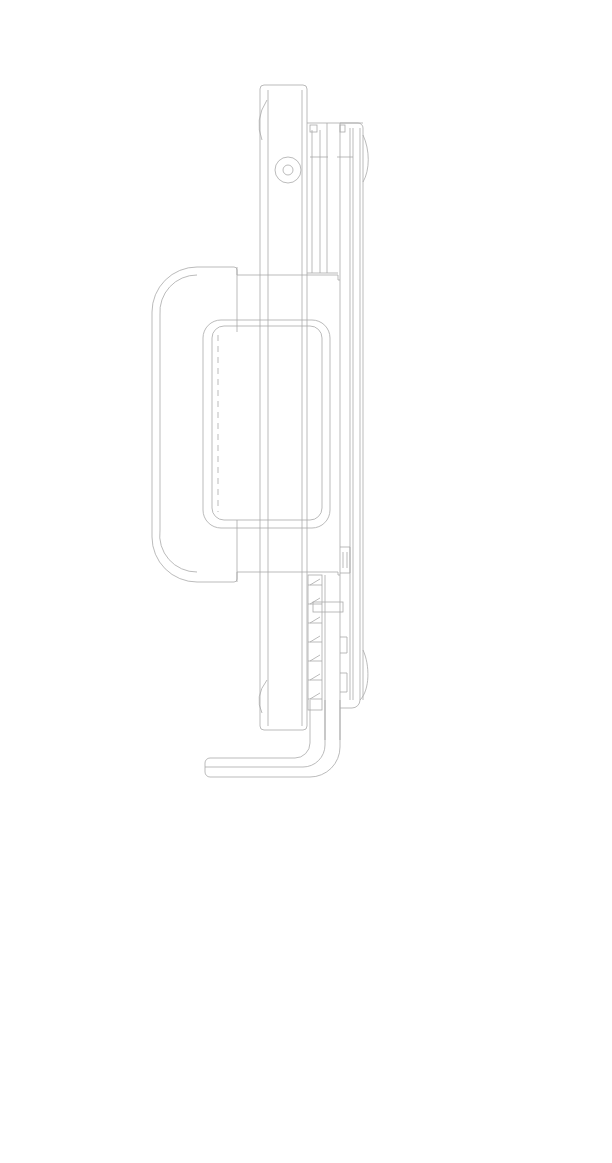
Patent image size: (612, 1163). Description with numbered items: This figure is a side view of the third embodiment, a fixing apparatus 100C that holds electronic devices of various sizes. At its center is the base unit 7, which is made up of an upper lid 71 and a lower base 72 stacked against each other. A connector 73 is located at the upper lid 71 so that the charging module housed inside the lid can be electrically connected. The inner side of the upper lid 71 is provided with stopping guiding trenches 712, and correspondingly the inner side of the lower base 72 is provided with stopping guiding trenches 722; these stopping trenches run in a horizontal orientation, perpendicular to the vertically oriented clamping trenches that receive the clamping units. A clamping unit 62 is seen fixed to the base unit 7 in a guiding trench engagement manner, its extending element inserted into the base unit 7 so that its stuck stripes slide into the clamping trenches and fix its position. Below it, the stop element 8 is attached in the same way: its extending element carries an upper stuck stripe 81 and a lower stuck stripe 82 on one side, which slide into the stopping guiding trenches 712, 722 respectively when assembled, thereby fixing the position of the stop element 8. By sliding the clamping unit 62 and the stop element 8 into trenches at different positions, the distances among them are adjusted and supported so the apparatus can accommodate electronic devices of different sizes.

The fixing apparatus 100C is at (175, 147).
The base unit 7 is at (467, 150).
The upper lid 71 is at (288, 203).
The lower base 72 is at (347, 233).
The connector 73 is at (288, 157).
The stopping guiding trenches 712 is at (317, 682).
The stopping guiding trenches 722 is at (342, 680).
The clamping unit 62 is at (160, 380).
The upper stuck stripe 81 is at (317, 605).
The lower stuck stripe 82 is at (345, 605).
The stop element 8 is at (255, 767).